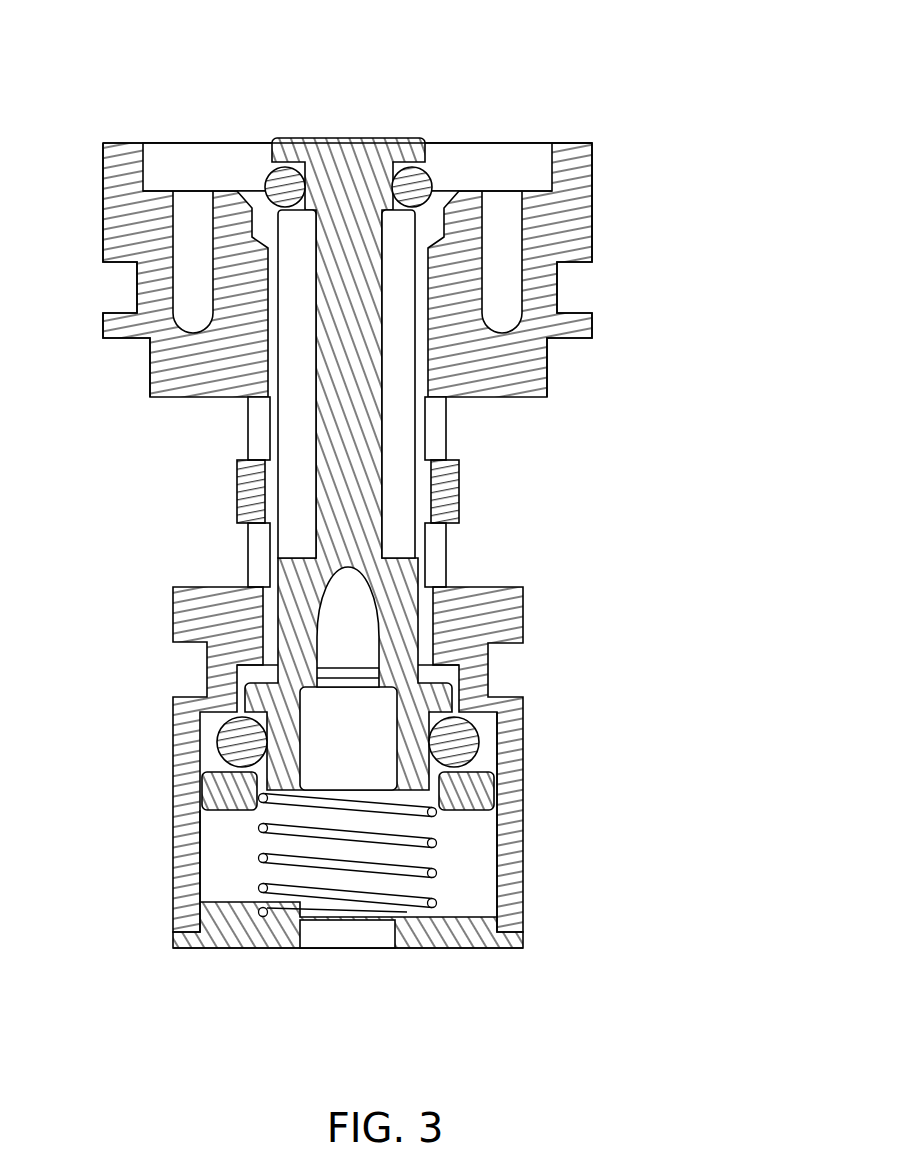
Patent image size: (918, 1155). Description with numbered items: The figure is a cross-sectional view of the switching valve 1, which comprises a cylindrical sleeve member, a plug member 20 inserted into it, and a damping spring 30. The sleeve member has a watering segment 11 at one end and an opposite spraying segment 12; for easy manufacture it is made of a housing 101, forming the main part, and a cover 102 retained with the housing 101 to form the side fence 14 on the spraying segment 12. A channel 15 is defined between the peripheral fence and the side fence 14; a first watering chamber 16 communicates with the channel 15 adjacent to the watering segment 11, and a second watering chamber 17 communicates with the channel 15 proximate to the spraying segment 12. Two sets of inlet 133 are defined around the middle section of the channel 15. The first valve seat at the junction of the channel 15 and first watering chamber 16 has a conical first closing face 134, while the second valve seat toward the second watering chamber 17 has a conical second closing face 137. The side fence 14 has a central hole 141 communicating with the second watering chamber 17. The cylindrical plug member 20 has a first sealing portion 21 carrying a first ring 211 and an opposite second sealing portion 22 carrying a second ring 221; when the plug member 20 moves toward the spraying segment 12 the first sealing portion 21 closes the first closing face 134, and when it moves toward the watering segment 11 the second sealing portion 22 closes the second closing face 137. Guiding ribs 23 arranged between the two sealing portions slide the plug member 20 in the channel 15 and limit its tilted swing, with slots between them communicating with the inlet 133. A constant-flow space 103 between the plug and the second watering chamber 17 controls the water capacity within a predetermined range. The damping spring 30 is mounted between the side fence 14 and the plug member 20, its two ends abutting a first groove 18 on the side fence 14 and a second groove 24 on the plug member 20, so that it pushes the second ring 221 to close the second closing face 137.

The switching valve 1 is at (612, 490).
The watering segment 11 is at (570, 142).
The spraying segment 12 is at (418, 940).
The side fence 14 is at (218, 935).
The channel 15 is at (420, 318).
The first watering chamber 16 is at (163, 163).
The second watering chamber 17 is at (230, 857).
The first groove 18 is at (440, 900).
The plug member 20 is at (378, 133).
The first sealing portion 21 is at (282, 160).
The second sealing portion 22 is at (203, 795).
The guiding ribs 23 is at (285, 290).
The second groove 24 is at (428, 818).
The damping spring 30 is at (452, 847).
The housing 101 is at (600, 220).
The cover 102 is at (465, 955).
The constant-flow space 103 is at (495, 780).
The inlet 133 is at (258, 432).
The first closing face 134 is at (425, 238).
The second closing face 137 is at (200, 750).
The hole 141 is at (342, 940).
The first ring 211 is at (432, 167).
The second ring 221 is at (488, 742).